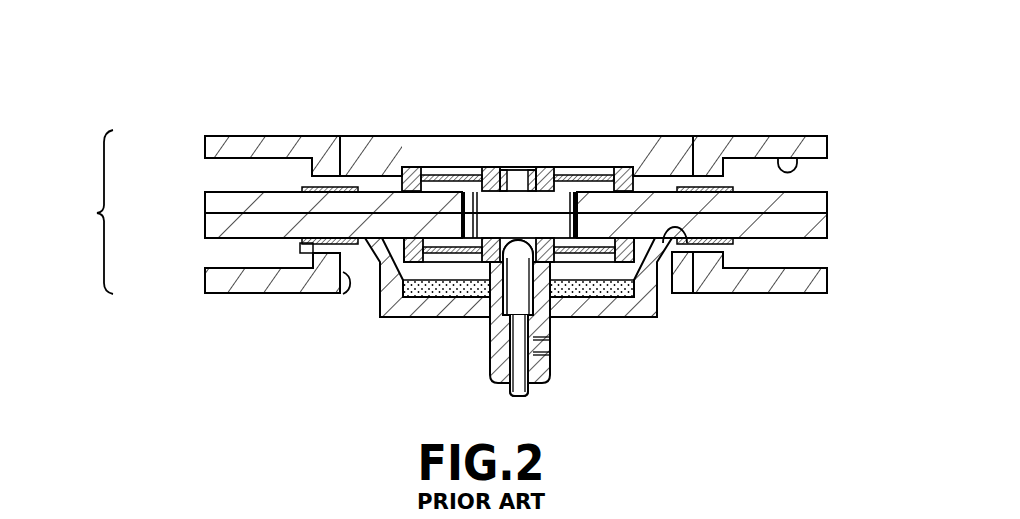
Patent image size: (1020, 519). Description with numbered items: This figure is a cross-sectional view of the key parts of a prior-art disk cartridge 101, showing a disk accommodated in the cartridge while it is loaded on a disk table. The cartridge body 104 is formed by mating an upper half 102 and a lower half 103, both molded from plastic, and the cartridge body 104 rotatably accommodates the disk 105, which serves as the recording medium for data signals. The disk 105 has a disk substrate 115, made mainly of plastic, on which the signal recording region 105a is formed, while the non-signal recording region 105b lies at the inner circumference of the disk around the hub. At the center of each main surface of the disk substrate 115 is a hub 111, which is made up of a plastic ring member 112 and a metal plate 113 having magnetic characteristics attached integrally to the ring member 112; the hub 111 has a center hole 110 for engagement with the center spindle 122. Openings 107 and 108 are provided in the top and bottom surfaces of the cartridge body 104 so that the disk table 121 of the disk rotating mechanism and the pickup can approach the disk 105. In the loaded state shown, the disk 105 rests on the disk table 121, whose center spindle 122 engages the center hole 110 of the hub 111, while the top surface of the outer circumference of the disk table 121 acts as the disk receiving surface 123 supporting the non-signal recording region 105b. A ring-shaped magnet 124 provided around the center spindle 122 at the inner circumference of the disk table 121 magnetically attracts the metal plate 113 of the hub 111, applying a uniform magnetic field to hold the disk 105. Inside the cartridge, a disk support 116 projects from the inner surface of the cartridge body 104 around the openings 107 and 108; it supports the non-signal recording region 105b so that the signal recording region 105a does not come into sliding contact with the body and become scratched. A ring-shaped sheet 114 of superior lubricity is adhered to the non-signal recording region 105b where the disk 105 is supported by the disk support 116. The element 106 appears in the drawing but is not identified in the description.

The disk cartridge 101 is at (196, 120).
The upper half 102 is at (212, 150).
The lower half 103 is at (213, 282).
The cartridge body 104 is at (77, 212).
The disk 105 is at (250, 200).
The signal recording region 105a is at (808, 268).
The non-signal recording region 105b is at (712, 243).
The seal projection 106 is at (790, 158).
The opening 107 is at (342, 170).
The opening 108 is at (357, 284).
The center hole 110 is at (525, 170).
The hub 111 is at (622, 167).
The ring member 112 is at (417, 167).
The metal plate 113 is at (457, 176).
The ring-shaped sheet 114 is at (405, 167).
The disk substrate 115 is at (240, 275).
The disk support 116 is at (302, 186).
The disk table 121 is at (642, 312).
The center spindle 122 is at (492, 318).
The disk receiving surface 123 is at (675, 245).
The ring-shaped magnet 124 is at (612, 300).